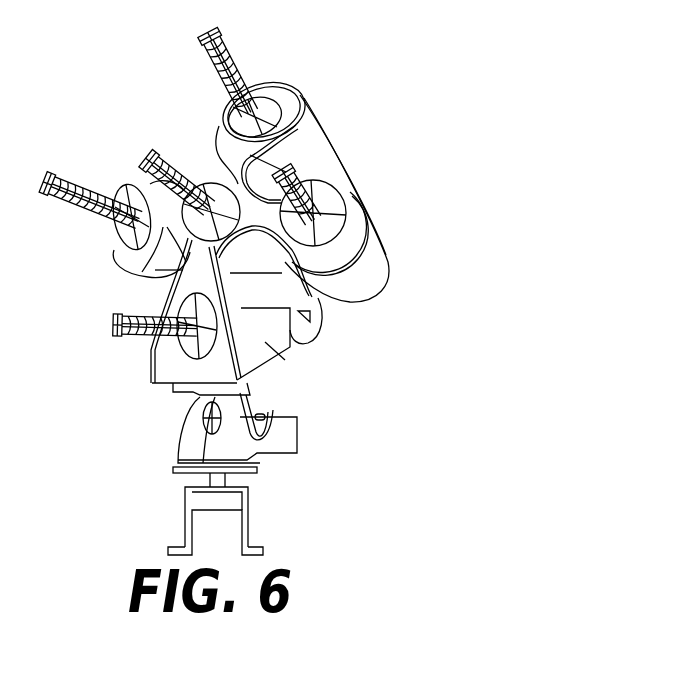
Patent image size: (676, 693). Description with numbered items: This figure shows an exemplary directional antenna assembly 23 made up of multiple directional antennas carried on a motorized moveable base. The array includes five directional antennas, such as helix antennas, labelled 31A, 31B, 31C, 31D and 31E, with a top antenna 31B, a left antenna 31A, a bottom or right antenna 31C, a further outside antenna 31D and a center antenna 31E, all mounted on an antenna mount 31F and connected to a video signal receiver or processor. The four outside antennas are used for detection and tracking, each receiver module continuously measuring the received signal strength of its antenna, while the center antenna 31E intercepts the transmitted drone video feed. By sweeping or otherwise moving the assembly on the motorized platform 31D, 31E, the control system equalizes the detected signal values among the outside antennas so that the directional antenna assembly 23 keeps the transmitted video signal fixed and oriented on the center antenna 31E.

The directional antenna assembly 23 is at (489, 206).
The left directional antenna 31A is at (62, 172).
The top directional antenna 31B is at (259, 88).
The bottom/right directional antenna 31C is at (322, 180).
The directional antenna / motorized moveable base 31D is at (137, 334).
The center directional antenna / motorized moveable base 31E is at (166, 170).
The antenna mount 31F is at (267, 342).